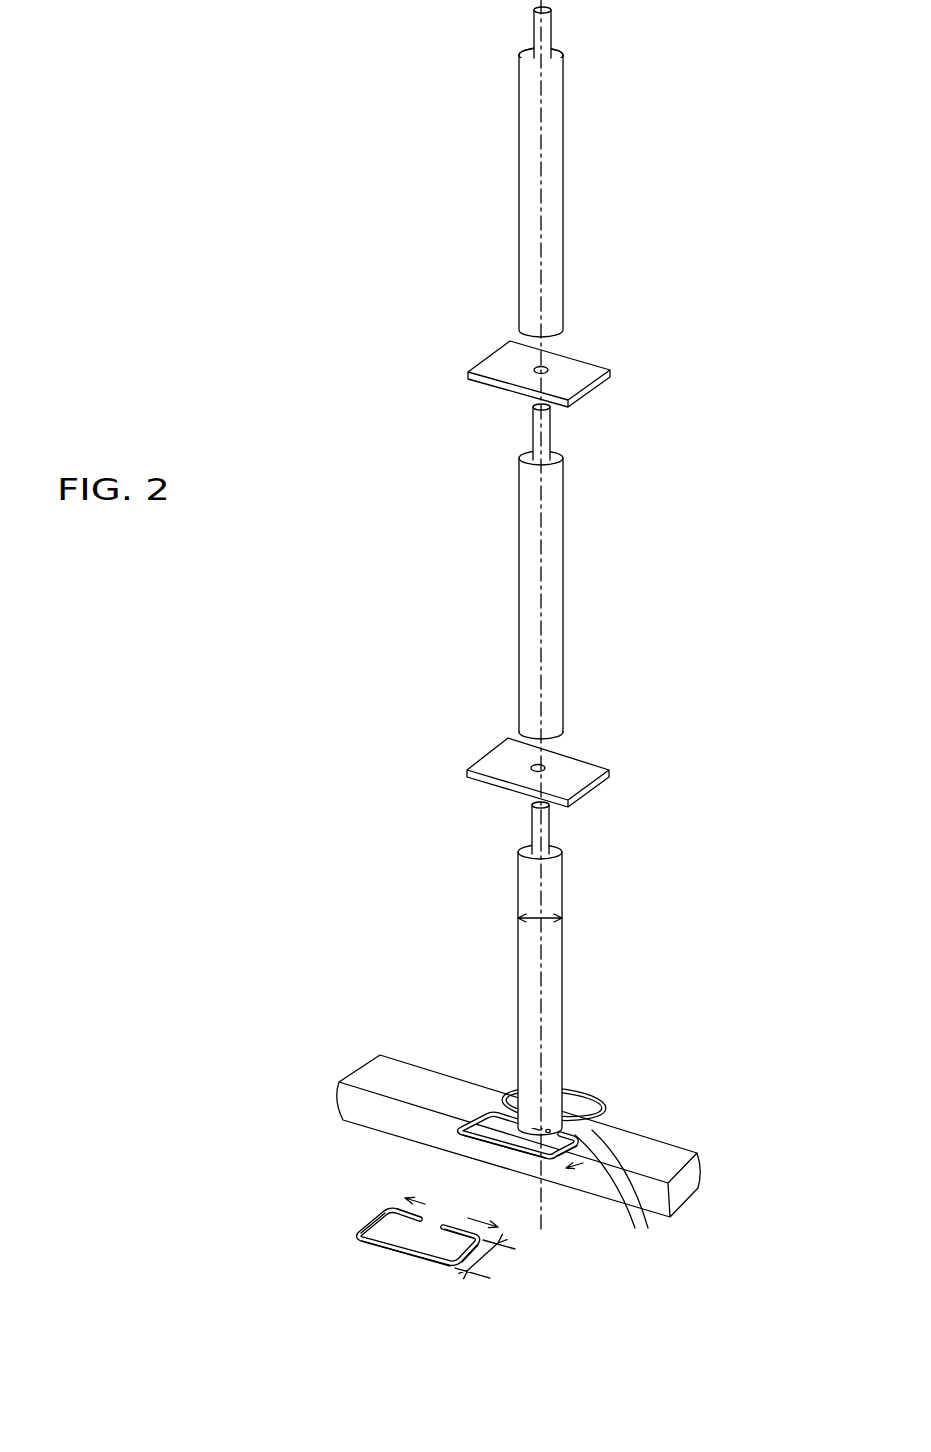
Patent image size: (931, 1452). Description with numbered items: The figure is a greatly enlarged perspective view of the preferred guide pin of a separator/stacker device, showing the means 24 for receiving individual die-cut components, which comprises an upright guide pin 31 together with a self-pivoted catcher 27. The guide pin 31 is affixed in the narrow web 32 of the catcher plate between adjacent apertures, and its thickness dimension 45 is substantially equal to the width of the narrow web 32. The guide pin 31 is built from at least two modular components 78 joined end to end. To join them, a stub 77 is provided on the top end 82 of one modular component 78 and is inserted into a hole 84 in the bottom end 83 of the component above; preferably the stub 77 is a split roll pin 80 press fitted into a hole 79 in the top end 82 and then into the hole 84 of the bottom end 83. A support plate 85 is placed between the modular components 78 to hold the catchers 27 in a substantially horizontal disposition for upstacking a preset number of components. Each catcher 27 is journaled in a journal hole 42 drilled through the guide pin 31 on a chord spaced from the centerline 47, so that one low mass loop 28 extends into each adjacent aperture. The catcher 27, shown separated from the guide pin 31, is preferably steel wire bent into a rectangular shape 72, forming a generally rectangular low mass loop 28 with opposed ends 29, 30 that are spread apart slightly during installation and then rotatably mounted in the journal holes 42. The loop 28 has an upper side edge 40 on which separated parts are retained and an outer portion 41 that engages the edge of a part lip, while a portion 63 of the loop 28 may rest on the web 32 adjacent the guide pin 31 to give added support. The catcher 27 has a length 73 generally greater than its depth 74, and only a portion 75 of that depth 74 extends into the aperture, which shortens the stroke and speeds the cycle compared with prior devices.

The means for receiving 24 is at (728, 950).
The self-pivoted catcher 27 is at (518, 1155).
The low mass loop 28 is at (472, 1145).
The opposed end 29 is at (565, 1118).
The opposed end 30 is at (392, 1219).
The guide pin 31 is at (266, 226).
The narrow web 32 is at (665, 1171).
The upper side edge 40 is at (605, 1098).
The outer portion 41 is at (593, 1093).
The journal hole 42 is at (621, 1194).
The thickness dimension 45 is at (540, 933).
The centerline 47 is at (540, 877).
The portion of low mass loop 63 is at (603, 1113).
The rectangular shape 72 is at (321, 1280).
The length 73 is at (451, 1210).
The depth 74 is at (496, 1260).
The portion of depth 75 is at (583, 1163).
The stub 77 is at (545, 425).
The modular component 78 is at (520, 627).
The hole 79 is at (520, 57).
The split roll pin 80 is at (540, 25).
The top end 82 is at (562, 53).
The bottom end 83 is at (548, 737).
The hole 84 is at (548, 337).
The support plate 85 is at (483, 367).